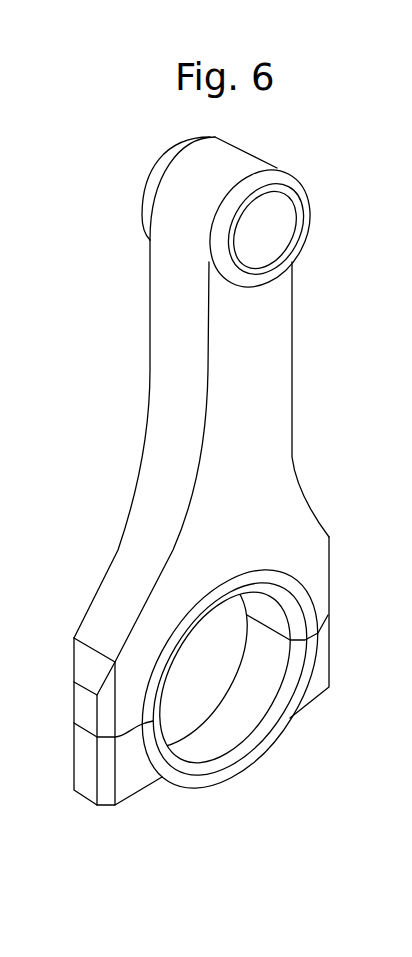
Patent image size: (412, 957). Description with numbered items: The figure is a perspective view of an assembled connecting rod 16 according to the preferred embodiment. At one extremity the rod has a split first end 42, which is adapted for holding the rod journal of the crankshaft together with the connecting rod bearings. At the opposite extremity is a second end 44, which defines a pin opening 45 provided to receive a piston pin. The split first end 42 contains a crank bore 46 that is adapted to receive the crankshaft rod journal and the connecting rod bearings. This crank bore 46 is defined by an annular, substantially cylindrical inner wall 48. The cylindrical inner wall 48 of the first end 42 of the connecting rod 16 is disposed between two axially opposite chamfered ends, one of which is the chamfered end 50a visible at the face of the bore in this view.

The connecting rod 16 is at (312, 405).
The split first end 42 is at (345, 577).
The second end 44 is at (180, 222).
The pin opening 45 is at (268, 229).
The crank bore 46 is at (217, 638).
The cylindrical inner wall 48 is at (262, 718).
The chamfered end 50a is at (217, 763).